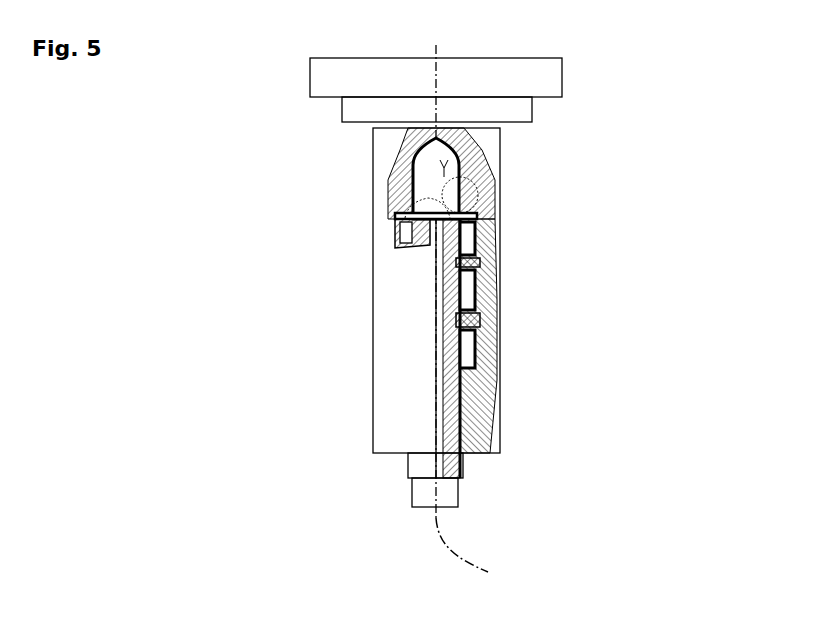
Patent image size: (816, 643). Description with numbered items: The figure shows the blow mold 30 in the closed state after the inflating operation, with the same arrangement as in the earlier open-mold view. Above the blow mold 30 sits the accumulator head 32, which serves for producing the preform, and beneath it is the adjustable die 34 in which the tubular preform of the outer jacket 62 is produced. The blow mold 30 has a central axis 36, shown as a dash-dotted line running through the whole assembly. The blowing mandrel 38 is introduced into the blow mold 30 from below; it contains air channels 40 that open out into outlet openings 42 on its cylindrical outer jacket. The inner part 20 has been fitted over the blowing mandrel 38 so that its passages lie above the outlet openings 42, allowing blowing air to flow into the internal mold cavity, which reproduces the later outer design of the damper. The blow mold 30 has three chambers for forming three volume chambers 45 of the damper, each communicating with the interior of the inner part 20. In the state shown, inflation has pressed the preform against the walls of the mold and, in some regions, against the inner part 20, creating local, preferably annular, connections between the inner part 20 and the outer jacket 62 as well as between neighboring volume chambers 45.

The accumulator head 32 is at (572, 75).
The die 34 is at (513, 111).
The blow mold 30 is at (392, 389).
The air channels 40 is at (435, 203).
The outlet openings 42 is at (418, 218).
The outer jacket 62 is at (457, 233).
The inner part 20 is at (457, 298).
The volume chambers 45 is at (468, 348).
The blowing mandrel 38 is at (418, 497).
The central axis 36 is at (472, 565).